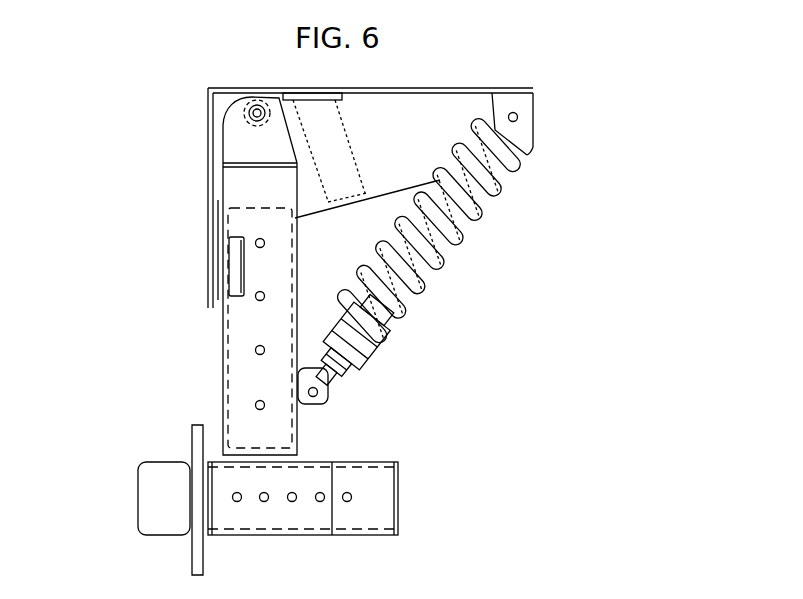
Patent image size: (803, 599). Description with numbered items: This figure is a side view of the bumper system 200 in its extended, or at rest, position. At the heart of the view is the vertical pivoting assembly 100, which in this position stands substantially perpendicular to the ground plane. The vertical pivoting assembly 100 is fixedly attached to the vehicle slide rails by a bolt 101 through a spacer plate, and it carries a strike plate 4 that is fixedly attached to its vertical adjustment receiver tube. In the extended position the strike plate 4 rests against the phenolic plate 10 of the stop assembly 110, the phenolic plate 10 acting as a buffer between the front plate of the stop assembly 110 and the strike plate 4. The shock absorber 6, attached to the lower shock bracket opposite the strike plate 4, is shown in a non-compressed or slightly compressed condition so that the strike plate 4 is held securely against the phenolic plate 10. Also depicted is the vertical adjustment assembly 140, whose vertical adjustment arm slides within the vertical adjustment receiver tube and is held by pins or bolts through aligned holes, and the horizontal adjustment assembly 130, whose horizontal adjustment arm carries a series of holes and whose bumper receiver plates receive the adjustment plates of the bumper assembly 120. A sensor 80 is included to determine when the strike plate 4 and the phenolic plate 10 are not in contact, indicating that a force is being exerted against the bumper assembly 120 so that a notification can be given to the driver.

The bumper system 200 is at (705, 128).
The phenolic plate 10 is at (215, 312).
The strike plate 4 is at (228, 265).
The bolt 101 is at (257, 108).
The vertical pivoting assembly 100 is at (240, 192).
The vertical adjustment assembly 140 is at (277, 433).
The sensor 80 is at (232, 248).
The bumper assembly 120 is at (150, 495).
The horizontal adjustment assembly 130 is at (383, 505).
The shock absorber 6 is at (418, 277).
The stop assembly 110 is at (417, 250).